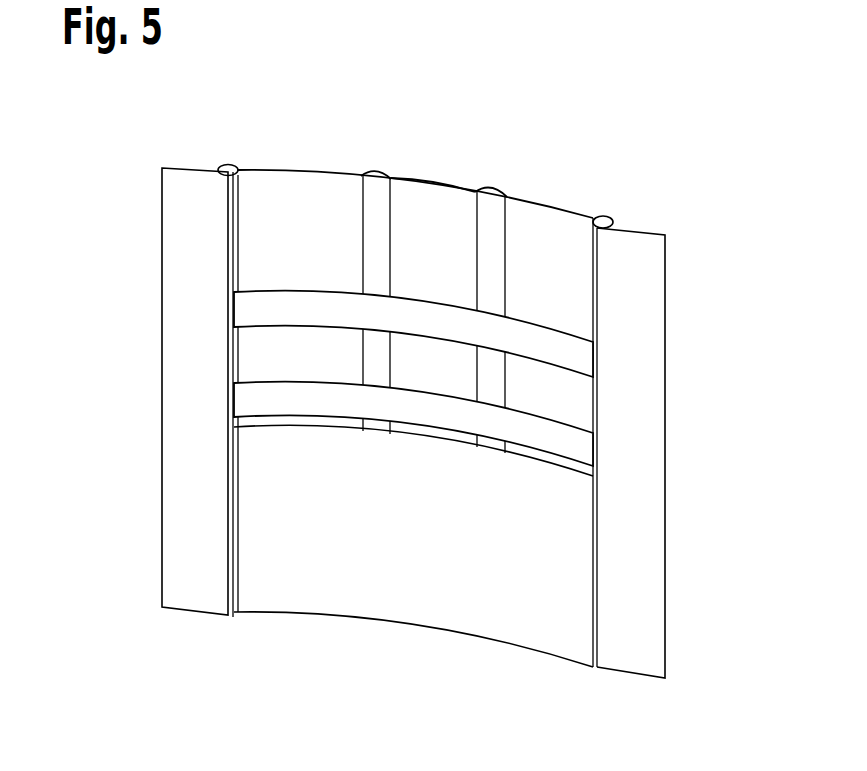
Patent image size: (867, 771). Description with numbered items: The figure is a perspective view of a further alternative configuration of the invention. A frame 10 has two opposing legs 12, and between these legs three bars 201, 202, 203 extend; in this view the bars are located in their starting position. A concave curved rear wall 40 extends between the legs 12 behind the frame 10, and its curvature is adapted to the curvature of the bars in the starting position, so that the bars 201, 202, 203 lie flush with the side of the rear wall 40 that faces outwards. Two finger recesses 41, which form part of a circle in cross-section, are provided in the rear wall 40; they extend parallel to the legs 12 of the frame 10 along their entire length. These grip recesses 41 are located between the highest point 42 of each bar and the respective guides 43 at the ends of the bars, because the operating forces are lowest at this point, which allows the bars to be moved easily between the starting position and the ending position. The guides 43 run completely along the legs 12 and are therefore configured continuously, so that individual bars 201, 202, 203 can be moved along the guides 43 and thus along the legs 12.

The frame 10 is at (162, 347).
The legs 12 is at (187, 502).
The rear wall 40 is at (307, 170).
The finger recesses 41 is at (380, 175).
The highest point 42 is at (437, 303).
The guides 43 is at (233, 165).
The bar 203 is at (543, 332).
The bar 202 is at (563, 433).
The bar 201 is at (460, 592).